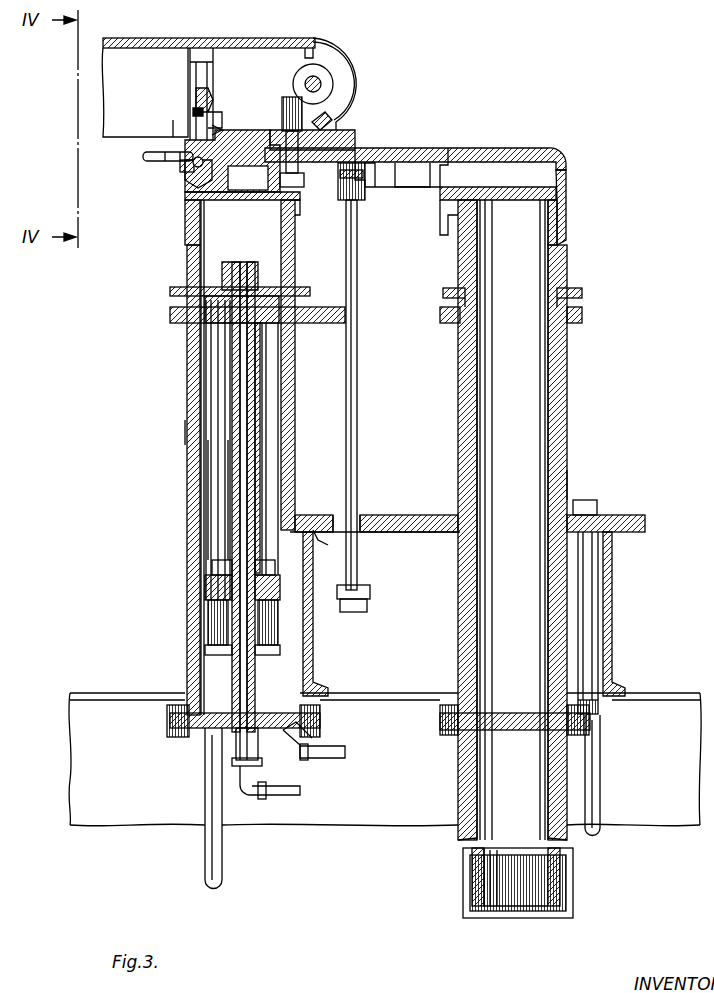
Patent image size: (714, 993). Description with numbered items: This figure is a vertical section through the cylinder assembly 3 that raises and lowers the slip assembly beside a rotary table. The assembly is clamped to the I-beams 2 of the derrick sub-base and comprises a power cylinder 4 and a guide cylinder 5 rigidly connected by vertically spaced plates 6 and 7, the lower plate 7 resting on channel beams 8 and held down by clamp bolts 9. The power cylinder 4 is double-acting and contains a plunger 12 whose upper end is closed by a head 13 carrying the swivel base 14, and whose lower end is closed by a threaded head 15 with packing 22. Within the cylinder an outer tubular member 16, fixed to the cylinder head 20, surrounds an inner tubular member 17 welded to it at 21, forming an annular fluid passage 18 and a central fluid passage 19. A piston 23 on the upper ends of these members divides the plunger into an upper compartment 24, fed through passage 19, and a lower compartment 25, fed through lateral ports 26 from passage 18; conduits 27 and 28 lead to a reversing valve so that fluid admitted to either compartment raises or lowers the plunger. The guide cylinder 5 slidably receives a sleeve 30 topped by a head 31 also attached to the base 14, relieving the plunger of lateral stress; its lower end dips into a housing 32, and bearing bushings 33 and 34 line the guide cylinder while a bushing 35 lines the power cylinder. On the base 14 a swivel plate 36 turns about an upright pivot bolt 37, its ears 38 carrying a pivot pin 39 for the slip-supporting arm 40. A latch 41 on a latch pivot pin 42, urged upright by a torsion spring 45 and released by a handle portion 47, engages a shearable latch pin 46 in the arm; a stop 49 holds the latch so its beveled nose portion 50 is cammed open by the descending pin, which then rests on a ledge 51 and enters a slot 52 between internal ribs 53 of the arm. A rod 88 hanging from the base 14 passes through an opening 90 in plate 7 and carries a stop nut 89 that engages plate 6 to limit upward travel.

The I-beams 2 is at (78, 762).
The cylinder assembly 3 is at (572, 482).
The power cylinder 4 is at (186, 433).
The guide cylinder 5 is at (568, 440).
The upper plate 6 is at (583, 312).
The lower plate 7 is at (642, 525).
The channel beams 8 is at (606, 650).
The clamp bolts 9 is at (207, 785).
The plunger 12 is at (190, 258).
The head 13 is at (190, 212).
The swivel base 14 is at (452, 150).
The lower plunger head 15 is at (210, 590).
The outer tubular member 16 is at (230, 452).
The inner tubular member 17 is at (235, 480).
The annular fluid passage 18 is at (260, 422).
The central fluid passage 19 is at (243, 370).
The cylinder head 20 is at (206, 730).
The welding 21 is at (258, 752).
The packing 22 is at (225, 605).
The piston 23 is at (195, 330).
The upper compartment 24 is at (292, 250).
The lower compartment 25 is at (263, 395).
The lateral ports 26 is at (256, 345).
The conduit 27 is at (302, 792).
The conduit 28 is at (336, 746).
The sleeve 30 is at (568, 380).
The head 31 is at (566, 215).
The housing 32 is at (575, 872).
The bearing bushing 33 is at (560, 352).
The bearing bushing 34 is at (560, 612).
The bushing 35 is at (200, 370).
The swivel plate 36 is at (346, 140).
The pivot bolt 37 is at (322, 112).
The ears 38 is at (332, 126).
The pivot pin 39 is at (322, 88).
The slip-supporting arm 40 is at (315, 40).
The latch 41 is at (190, 125).
The latch pivot pin 42 is at (195, 170).
The torsion spring 45 is at (180, 166).
The latch pin 46 is at (200, 115).
The handle portion 47 is at (140, 157).
The stop 49 is at (232, 161).
The beveled nose portion 50 is at (212, 100).
The ledge 51 is at (215, 126).
The slot 52 is at (213, 118).
The internal ribs 53 is at (200, 72).
The rod 88 is at (354, 432).
The stop nut 89 is at (366, 592).
The opening 90 is at (372, 518).